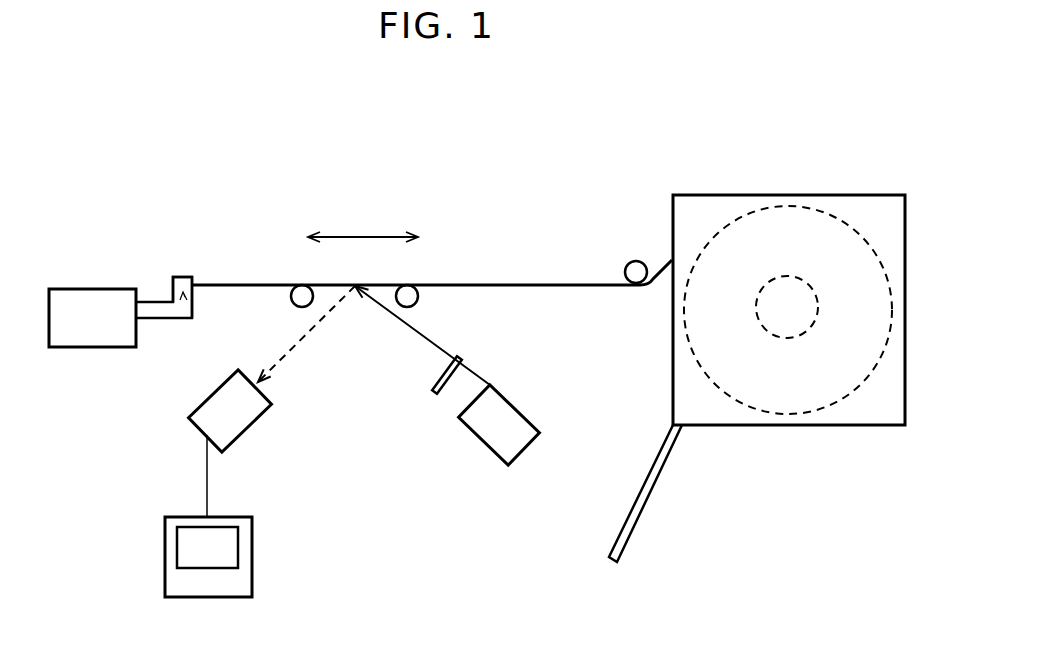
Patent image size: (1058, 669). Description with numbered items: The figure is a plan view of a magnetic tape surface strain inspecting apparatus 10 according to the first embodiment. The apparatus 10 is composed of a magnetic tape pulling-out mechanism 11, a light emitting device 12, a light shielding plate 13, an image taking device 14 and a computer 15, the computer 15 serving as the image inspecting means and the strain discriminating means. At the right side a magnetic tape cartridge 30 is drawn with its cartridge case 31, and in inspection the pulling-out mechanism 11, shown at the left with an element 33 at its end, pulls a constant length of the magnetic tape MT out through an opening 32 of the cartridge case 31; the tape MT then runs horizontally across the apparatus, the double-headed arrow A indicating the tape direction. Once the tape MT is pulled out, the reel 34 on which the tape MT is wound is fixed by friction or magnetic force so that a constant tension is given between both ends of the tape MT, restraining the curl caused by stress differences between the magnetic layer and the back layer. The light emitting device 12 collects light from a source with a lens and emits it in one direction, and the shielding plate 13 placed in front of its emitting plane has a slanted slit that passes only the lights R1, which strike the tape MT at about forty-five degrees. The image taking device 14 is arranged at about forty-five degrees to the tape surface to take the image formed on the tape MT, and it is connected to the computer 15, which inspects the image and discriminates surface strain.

The magnetic tape surface strain inspecting apparatus 10 is at (500, 126).
The magnetic tape pulling-out mechanism 11 is at (84, 292).
The magnetic head 33 is at (183, 276).
The magnetic tape MT is at (541, 273).
The tape running direction A is at (363, 222).
The lights R1 is at (415, 342).
The light emitting device 12 is at (515, 405).
The light shielding plate 13 is at (467, 358).
The image taking device 14 is at (215, 393).
The computer 15 is at (165, 555).
The magnetic tape cartridge 30 is at (813, 178).
The cartridge case 31 is at (700, 195).
The opening 32 is at (672, 362).
The reel 34 is at (808, 330).